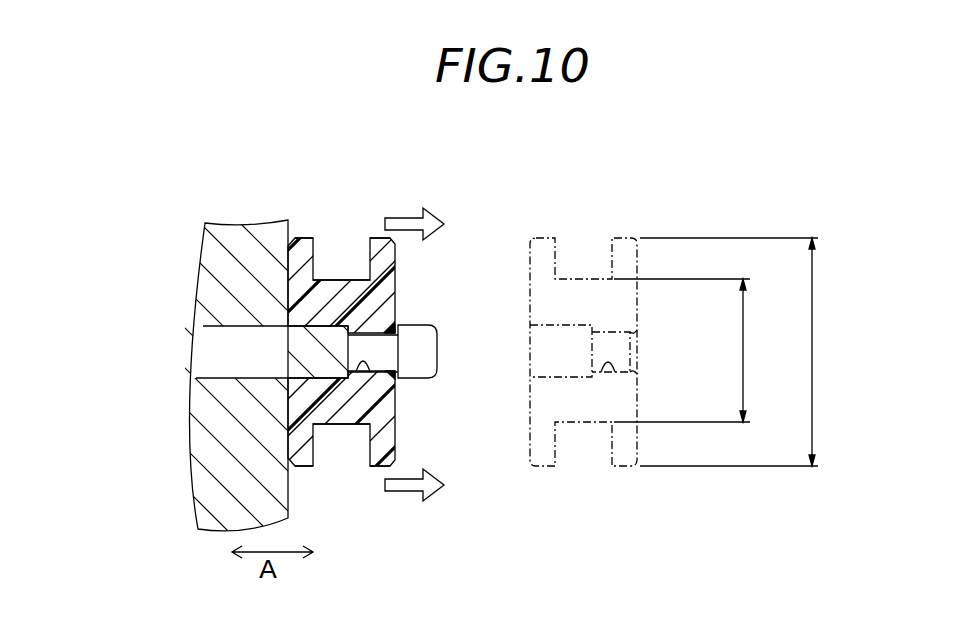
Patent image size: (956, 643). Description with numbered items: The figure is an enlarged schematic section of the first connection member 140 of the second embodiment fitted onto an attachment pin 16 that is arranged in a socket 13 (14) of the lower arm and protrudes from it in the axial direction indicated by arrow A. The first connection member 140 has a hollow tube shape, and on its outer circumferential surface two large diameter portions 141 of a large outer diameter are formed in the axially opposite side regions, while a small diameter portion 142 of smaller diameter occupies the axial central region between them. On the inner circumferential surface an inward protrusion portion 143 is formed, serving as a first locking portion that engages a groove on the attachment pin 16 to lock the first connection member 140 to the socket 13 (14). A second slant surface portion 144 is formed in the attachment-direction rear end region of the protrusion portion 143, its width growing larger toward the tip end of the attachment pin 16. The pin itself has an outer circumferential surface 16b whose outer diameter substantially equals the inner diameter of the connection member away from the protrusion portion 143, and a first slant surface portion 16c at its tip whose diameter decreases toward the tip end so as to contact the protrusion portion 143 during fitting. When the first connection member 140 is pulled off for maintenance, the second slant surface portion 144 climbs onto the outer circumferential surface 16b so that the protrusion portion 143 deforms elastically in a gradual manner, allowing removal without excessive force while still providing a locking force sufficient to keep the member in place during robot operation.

The socket 13 is at (213, 285).
The wall portion 14 is at (278, 377).
The attachment pin 16 is at (213, 357).
The outer circumferential surface 16b is at (418, 333).
The first slant surface portion 16c is at (434, 328).
The first connection member 140 is at (445, 234).
The large diameter portion 141 is at (293, 238).
The small diameter portion 142 is at (343, 280).
The protrusion portion 143 is at (361, 368).
The second slant surface portion 144 is at (398, 328).